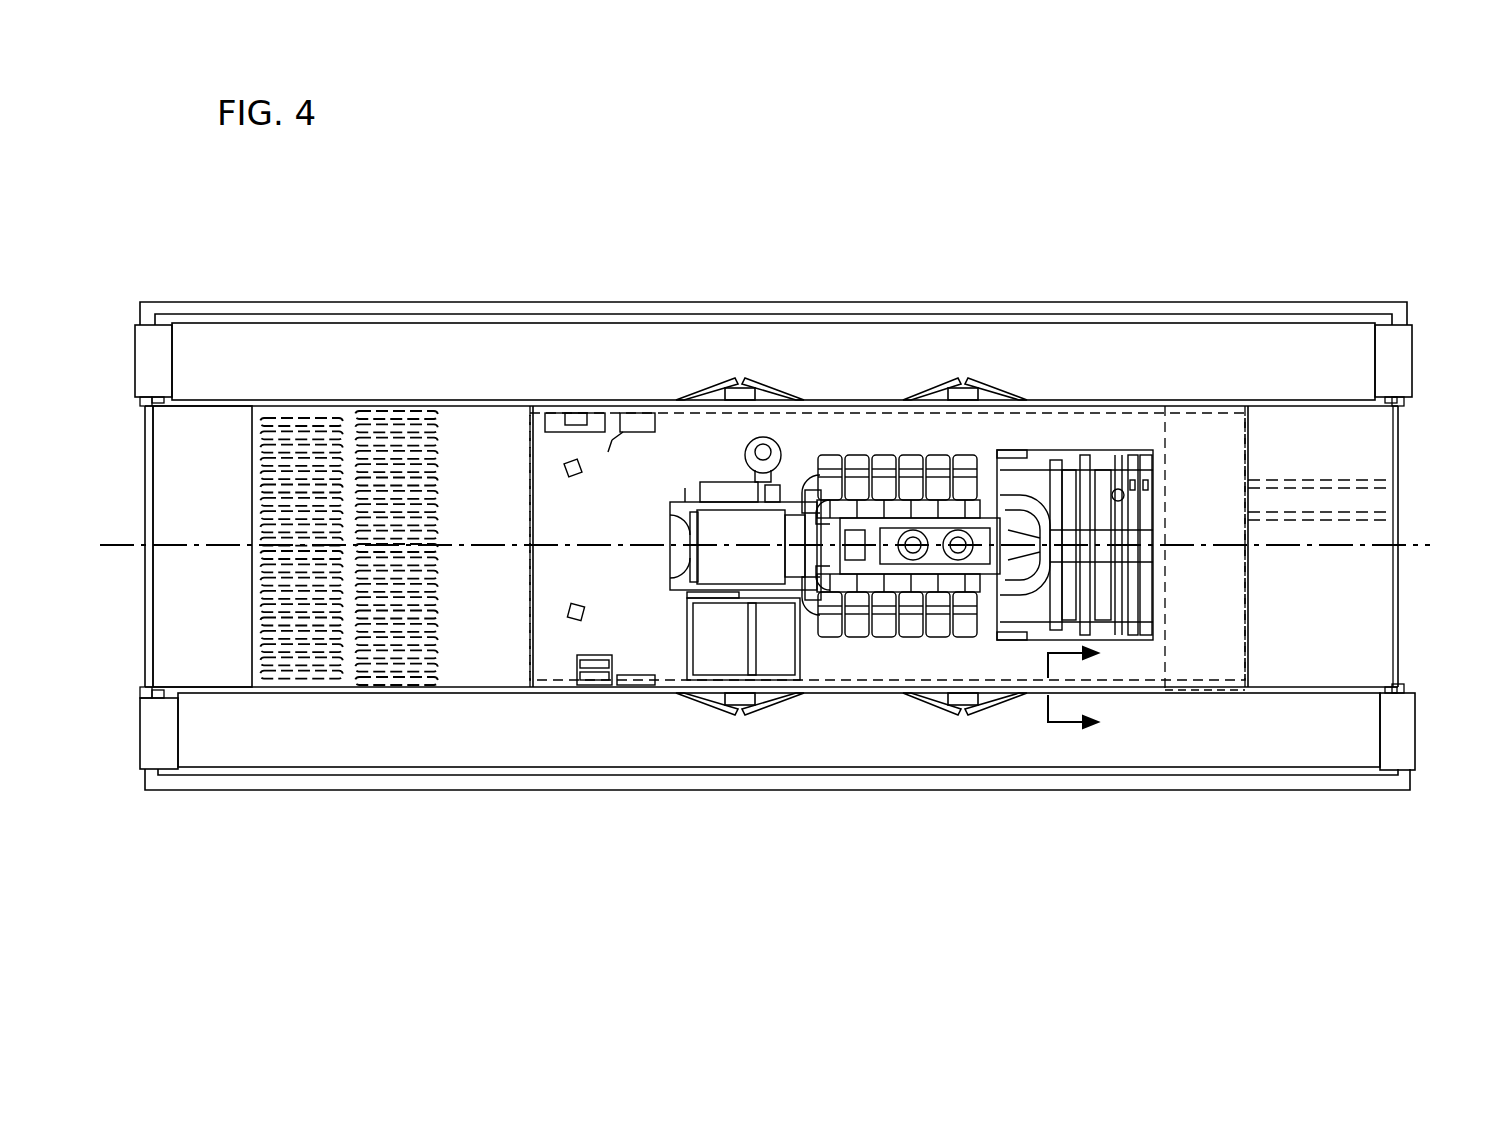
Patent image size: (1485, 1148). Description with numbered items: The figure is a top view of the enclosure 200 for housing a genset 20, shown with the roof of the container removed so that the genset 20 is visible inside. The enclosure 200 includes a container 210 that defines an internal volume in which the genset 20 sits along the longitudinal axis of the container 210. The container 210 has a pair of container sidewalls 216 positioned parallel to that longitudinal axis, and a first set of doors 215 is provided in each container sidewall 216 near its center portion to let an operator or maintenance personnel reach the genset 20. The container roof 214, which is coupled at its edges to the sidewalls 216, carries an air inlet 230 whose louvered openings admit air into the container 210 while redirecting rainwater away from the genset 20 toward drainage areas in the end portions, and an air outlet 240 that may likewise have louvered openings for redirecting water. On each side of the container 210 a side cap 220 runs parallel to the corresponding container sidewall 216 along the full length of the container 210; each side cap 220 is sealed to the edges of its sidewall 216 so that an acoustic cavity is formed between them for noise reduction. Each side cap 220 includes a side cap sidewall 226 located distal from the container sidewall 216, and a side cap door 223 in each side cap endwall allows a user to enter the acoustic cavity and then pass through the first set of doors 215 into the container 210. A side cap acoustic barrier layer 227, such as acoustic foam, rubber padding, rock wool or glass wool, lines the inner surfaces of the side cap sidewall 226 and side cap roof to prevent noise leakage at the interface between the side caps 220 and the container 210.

The genset 20 is at (1057, 436).
The enclosure 200 is at (1222, 248).
The container 210 is at (885, 704).
The container roof 214 is at (198, 620).
The first set of doors 215 is at (752, 385).
The container sidewalls 216 is at (462, 398).
The side cap 220 is at (527, 292).
The side cap door 223 is at (150, 363).
The side cap sidewall 226 is at (672, 312).
The side cap acoustic barrier layer 227 is at (385, 325).
The air inlet 230 is at (311, 412).
The air outlet 240 is at (1315, 702).